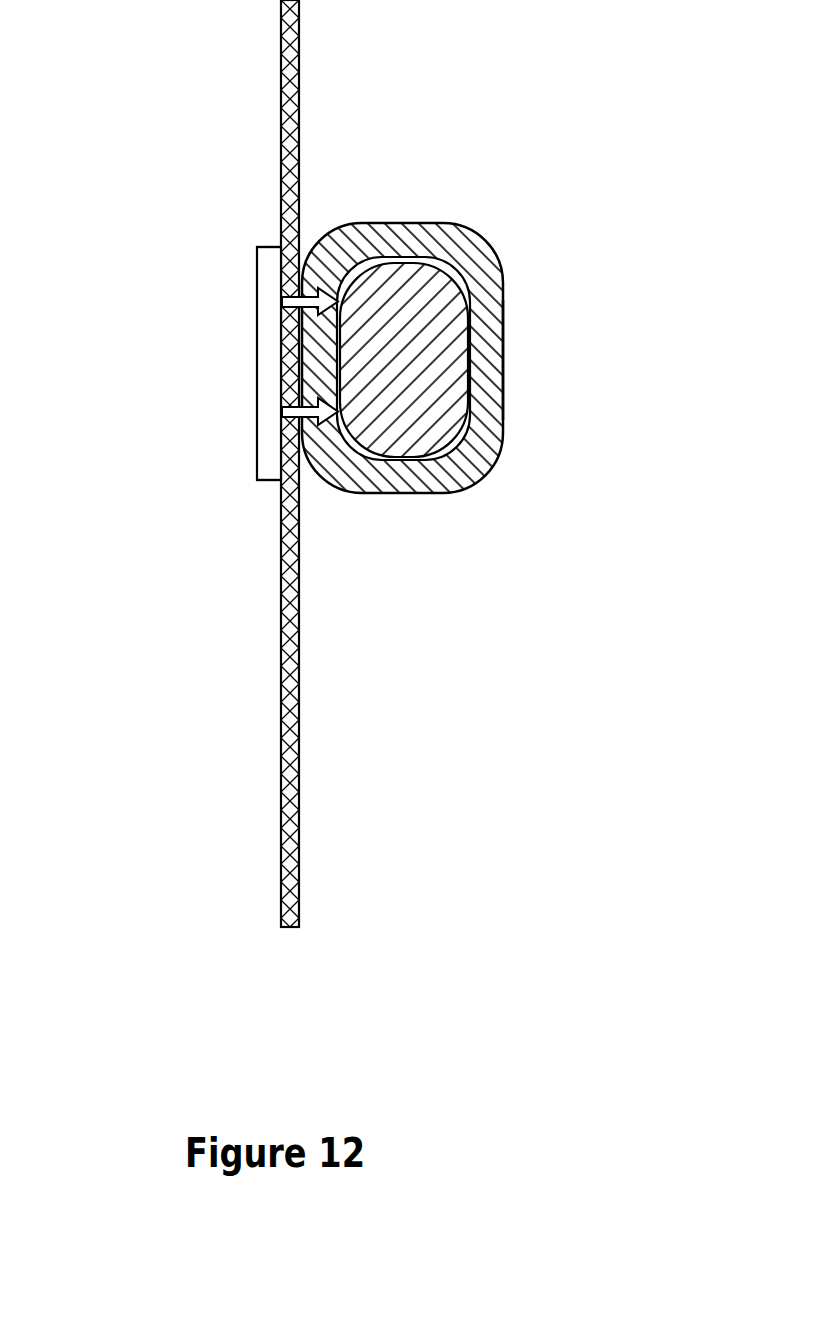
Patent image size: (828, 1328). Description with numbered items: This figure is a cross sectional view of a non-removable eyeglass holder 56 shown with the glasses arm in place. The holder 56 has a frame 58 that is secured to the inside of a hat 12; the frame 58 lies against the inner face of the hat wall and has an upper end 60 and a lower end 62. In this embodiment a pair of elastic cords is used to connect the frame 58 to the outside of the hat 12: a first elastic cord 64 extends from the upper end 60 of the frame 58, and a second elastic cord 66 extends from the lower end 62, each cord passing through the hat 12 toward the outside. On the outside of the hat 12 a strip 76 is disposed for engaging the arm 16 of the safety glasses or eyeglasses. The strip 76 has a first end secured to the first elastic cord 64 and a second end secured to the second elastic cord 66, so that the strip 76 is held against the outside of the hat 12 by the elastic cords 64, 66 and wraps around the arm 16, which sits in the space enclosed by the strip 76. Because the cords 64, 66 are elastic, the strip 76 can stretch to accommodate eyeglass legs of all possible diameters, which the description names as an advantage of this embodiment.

The hat 12 is at (290, 82).
The arm 16 is at (440, 292).
The holder 56 is at (490, 465).
The frame 58 is at (262, 360).
The upper end 60 is at (256, 263).
The lower end 62 is at (253, 465).
The first elastic cord 64 is at (328, 290).
The second elastic cord 66 is at (346, 478).
The strip 76 is at (494, 348).